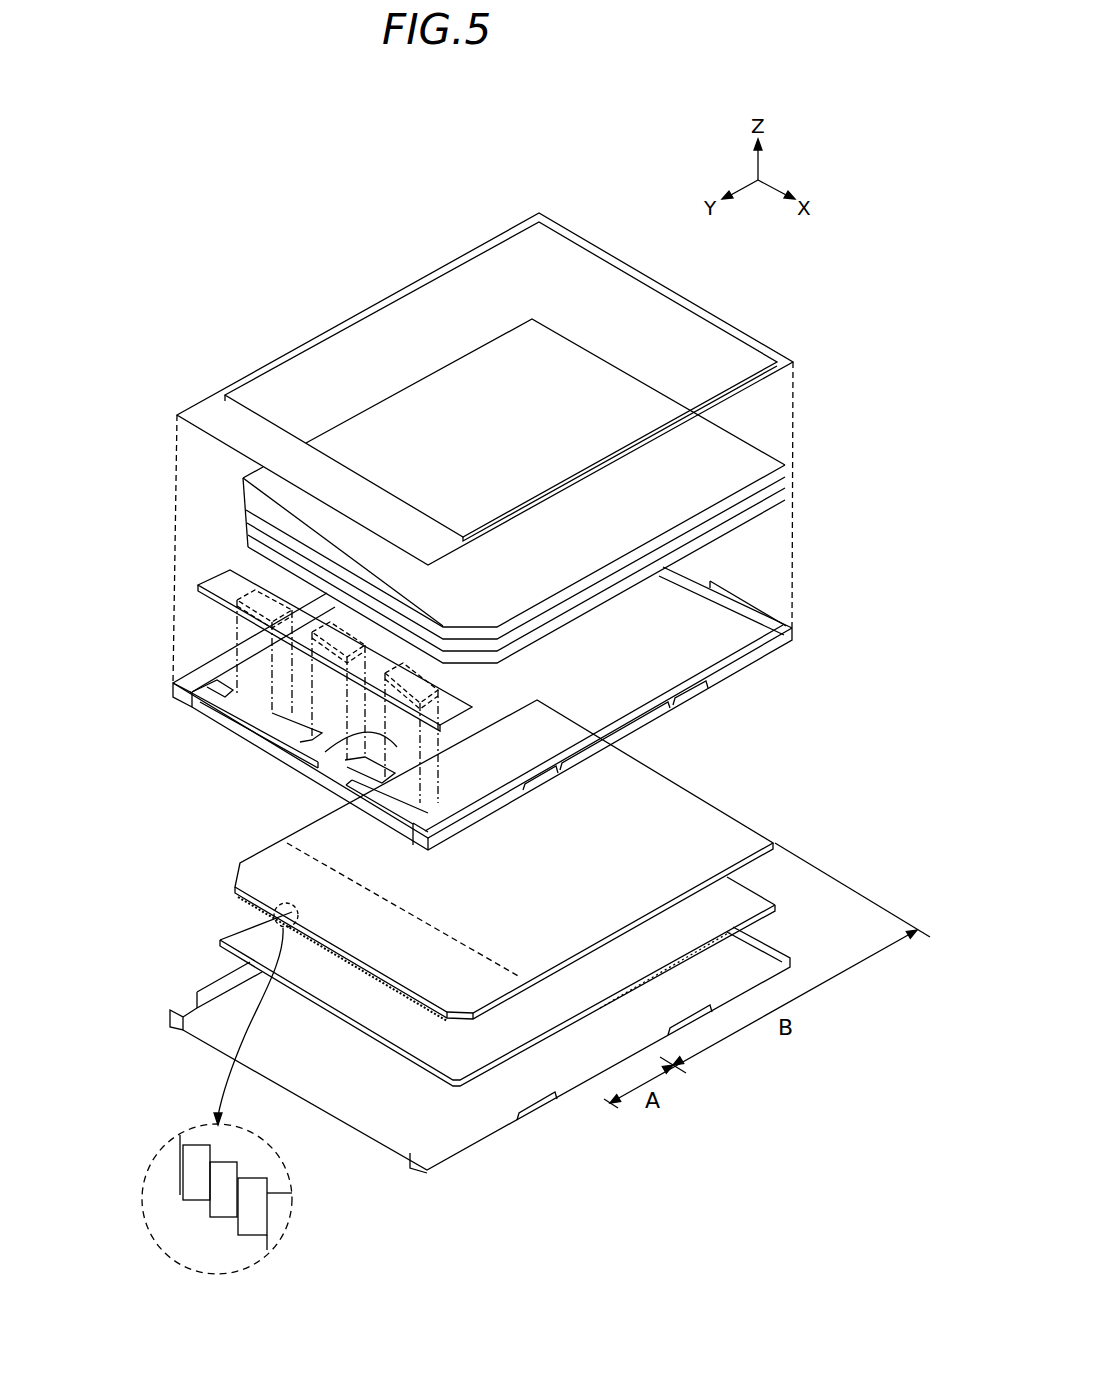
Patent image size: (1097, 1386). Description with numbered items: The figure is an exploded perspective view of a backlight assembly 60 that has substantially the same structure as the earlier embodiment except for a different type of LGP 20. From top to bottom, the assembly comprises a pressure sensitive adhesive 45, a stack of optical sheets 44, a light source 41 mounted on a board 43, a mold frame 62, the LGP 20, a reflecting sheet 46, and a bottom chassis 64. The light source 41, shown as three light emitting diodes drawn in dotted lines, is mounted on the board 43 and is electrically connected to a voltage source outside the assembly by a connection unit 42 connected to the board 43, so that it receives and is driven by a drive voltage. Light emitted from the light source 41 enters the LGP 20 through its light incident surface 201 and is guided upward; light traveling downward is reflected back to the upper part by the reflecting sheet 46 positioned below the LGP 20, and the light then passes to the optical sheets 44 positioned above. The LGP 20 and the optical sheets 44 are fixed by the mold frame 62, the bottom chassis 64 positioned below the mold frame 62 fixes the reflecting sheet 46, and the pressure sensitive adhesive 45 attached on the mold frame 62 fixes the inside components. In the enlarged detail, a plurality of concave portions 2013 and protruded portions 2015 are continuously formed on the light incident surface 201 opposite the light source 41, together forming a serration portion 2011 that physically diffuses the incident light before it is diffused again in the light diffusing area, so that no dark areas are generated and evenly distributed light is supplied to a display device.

The backlight assembly 60 is at (462, 190).
The pressure sensitive adhesive (PSA) 45 is at (766, 345).
The optical sheets 44 is at (794, 467).
The board 43 is at (220, 580).
The light source 41 is at (237, 616).
The mold frame 62 is at (793, 638).
The connection unit 42 is at (298, 760).
The LGP 20 is at (762, 828).
The reflecting sheet 46 is at (772, 905).
The bottom chassis 64 is at (763, 942).
The light incident surface 201 is at (370, 966).
The serration portion 2011 is at (251, 1222).
The concave portions 2013 is at (210, 1150).
The protruded portions 2015 is at (182, 1148).